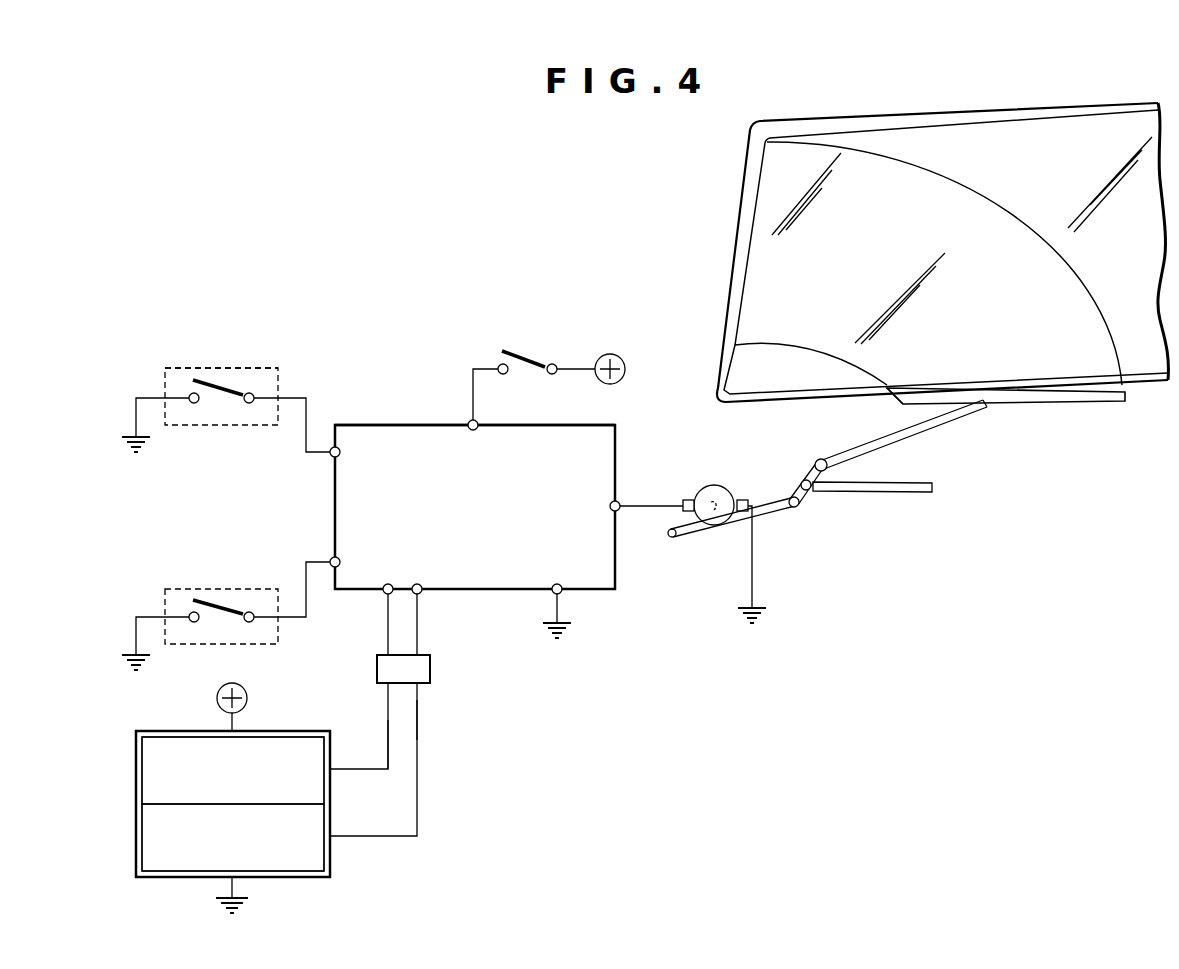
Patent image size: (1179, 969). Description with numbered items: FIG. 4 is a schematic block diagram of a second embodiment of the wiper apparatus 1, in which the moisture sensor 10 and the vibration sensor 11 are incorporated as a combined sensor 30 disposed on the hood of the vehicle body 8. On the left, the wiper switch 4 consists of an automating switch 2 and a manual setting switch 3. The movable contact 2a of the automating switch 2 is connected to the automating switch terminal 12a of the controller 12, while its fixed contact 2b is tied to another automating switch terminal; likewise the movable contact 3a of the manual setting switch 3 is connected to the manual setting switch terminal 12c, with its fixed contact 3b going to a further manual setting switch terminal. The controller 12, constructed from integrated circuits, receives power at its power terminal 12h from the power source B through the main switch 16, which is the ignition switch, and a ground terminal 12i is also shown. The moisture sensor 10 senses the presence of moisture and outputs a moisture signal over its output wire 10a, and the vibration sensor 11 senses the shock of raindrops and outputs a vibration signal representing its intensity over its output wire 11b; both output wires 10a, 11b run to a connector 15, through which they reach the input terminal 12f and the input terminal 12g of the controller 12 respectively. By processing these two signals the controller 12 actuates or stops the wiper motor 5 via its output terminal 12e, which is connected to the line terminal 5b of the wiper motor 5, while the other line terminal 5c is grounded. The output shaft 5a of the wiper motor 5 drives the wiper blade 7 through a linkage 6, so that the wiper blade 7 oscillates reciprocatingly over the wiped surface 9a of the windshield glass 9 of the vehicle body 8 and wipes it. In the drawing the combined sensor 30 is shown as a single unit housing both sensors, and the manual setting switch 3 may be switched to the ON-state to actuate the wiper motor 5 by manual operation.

The wiper apparatus 1 is at (393, 358).
The automating switch 2 is at (212, 427).
The movable contact 2a is at (250, 393).
The fixed contact 2b is at (193, 393).
The manual setting switch 3 is at (189, 589).
The movable contact 3a is at (252, 612).
The fixed contact 3b is at (190, 612).
The wiper switch 4 is at (192, 452).
The wiper motor 5 is at (716, 486).
The output shaft 5a is at (712, 515).
The line terminal 5b is at (688, 498).
The line terminal 5c is at (746, 498).
The linkage 6 is at (780, 512).
The wiper blade 7 is at (1068, 403).
The vehicle body 8 is at (822, 121).
The windshield glass 9 is at (973, 140).
The wiped surface 9a is at (875, 185).
The moisture sensor 10 is at (136, 752).
The output wire 10a is at (389, 742).
The vibration sensor 11 is at (136, 834).
The output wire 11b is at (418, 714).
The controller 12 is at (405, 422).
The automating switch terminal 12a is at (330, 446).
The manual setting switch terminal 12c is at (338, 568).
The output terminal 12e is at (620, 501).
The input terminal 12f is at (385, 597).
The input terminal 12g is at (421, 594).
The power terminal 12h is at (480, 424).
The controller ground terminal 12i is at (561, 594).
The connector 15 is at (431, 668).
The main switch 16 is at (530, 356).
The combined sensor 30 is at (178, 731).
The power source B is at (610, 354).